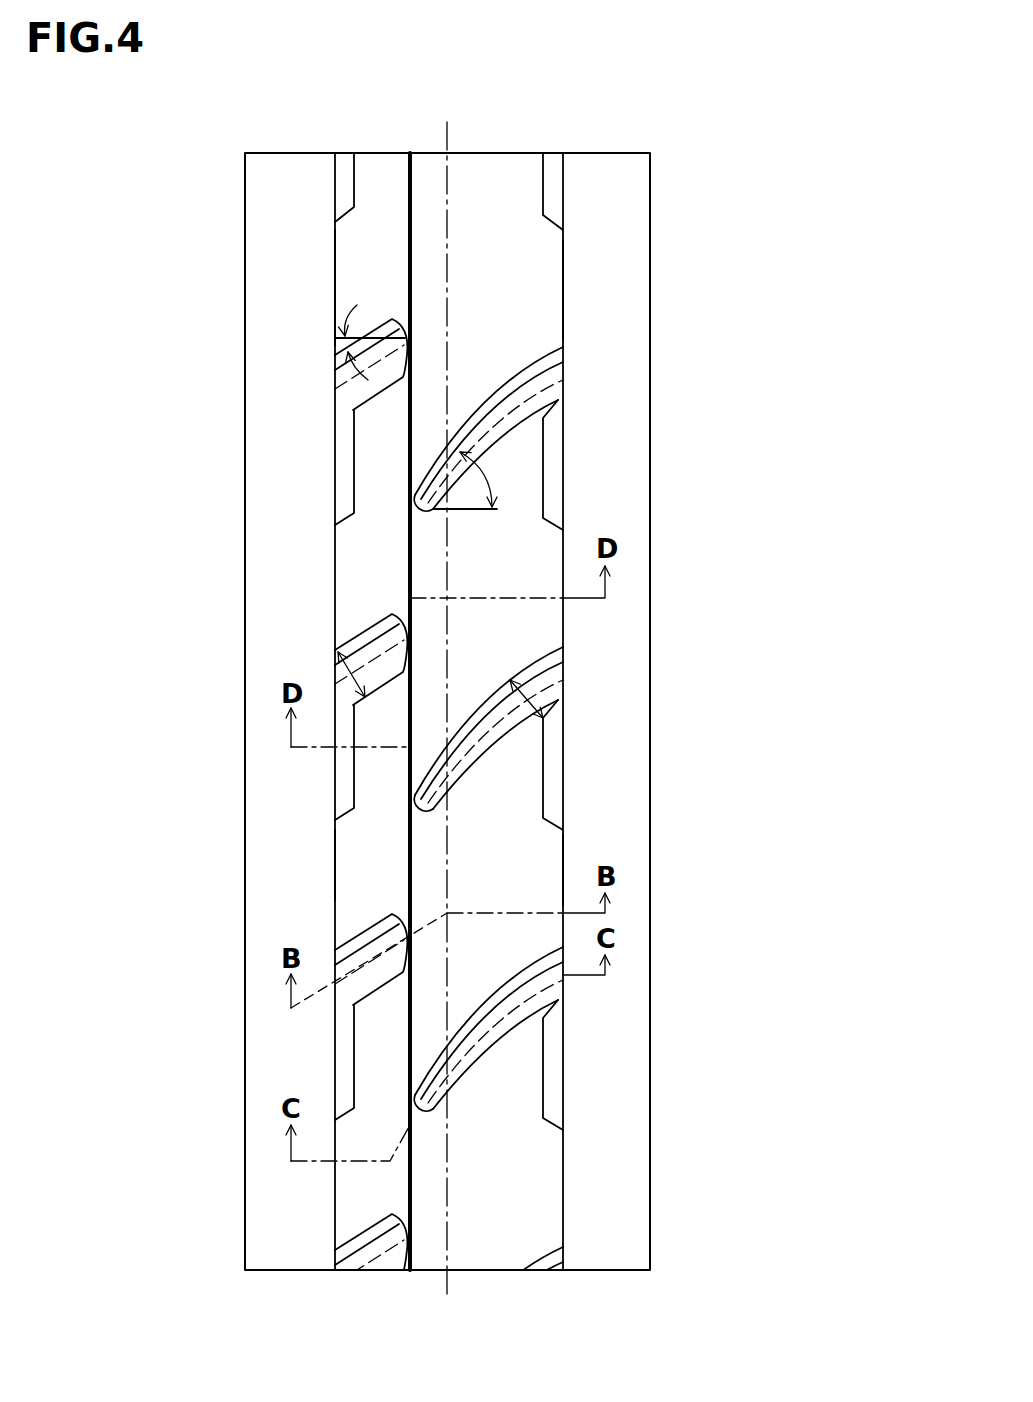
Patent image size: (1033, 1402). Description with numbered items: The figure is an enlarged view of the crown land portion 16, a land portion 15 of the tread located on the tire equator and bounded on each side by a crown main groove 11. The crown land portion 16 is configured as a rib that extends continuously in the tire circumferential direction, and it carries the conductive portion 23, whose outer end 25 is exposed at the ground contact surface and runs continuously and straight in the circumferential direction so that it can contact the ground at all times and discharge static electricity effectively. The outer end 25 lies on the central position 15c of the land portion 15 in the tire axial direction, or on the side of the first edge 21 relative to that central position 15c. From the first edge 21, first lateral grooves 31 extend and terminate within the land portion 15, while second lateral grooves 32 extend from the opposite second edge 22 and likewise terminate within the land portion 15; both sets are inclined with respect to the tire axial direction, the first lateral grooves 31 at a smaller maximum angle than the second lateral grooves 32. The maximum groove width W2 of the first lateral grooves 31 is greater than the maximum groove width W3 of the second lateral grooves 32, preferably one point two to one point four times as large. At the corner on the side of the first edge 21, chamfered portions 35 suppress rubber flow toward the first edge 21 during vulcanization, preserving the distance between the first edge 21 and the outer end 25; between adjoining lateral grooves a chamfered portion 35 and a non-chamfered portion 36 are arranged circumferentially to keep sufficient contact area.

The crown main groove 11 is at (288, 187).
The land portion 15 is at (503, 226).
The crown land portion 16 is at (510, 692).
The central position of the land portion 15c is at (447, 233).
The first edge 21 is at (333, 553).
The second edge 22 is at (563, 270).
The conductive portion 23 is at (410, 1033).
The outer end 25 is at (257, 1030).
The first lateral groove 31 is at (355, 388).
The second lateral groove 32 is at (553, 372).
The chamfered portion 35 is at (553, 493).
The non-chamfered portion 36 is at (553, 857).
The maximum groove width of the first lateral grooves W2 is at (343, 662).
The maximum groove width of the second lateral grooves W3 is at (547, 716).